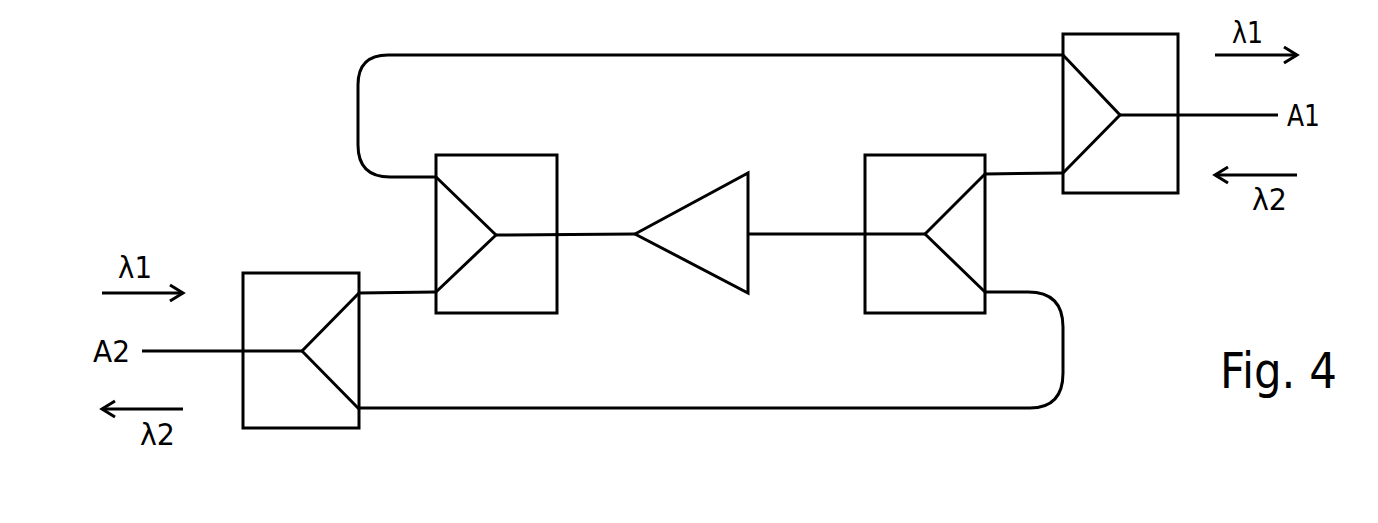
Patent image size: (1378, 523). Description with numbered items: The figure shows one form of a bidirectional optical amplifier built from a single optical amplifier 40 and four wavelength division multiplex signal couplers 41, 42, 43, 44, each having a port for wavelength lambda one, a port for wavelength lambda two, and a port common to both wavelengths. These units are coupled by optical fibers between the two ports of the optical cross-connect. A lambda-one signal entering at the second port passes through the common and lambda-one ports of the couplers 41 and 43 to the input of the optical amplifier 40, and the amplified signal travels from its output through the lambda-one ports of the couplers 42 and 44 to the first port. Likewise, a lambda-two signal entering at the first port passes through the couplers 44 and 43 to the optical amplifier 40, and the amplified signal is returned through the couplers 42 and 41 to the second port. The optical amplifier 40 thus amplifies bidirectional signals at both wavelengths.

The optical amplifier 40 is at (738, 277).
The wavelength division multiplex signal coupler 41 is at (265, 293).
The wavelength division multiplex signal coupler 42 is at (533, 295).
The wavelength division multiplex signal coupler 43 is at (887, 297).
The wavelength division multiplex signal coupler 44 is at (1147, 180).